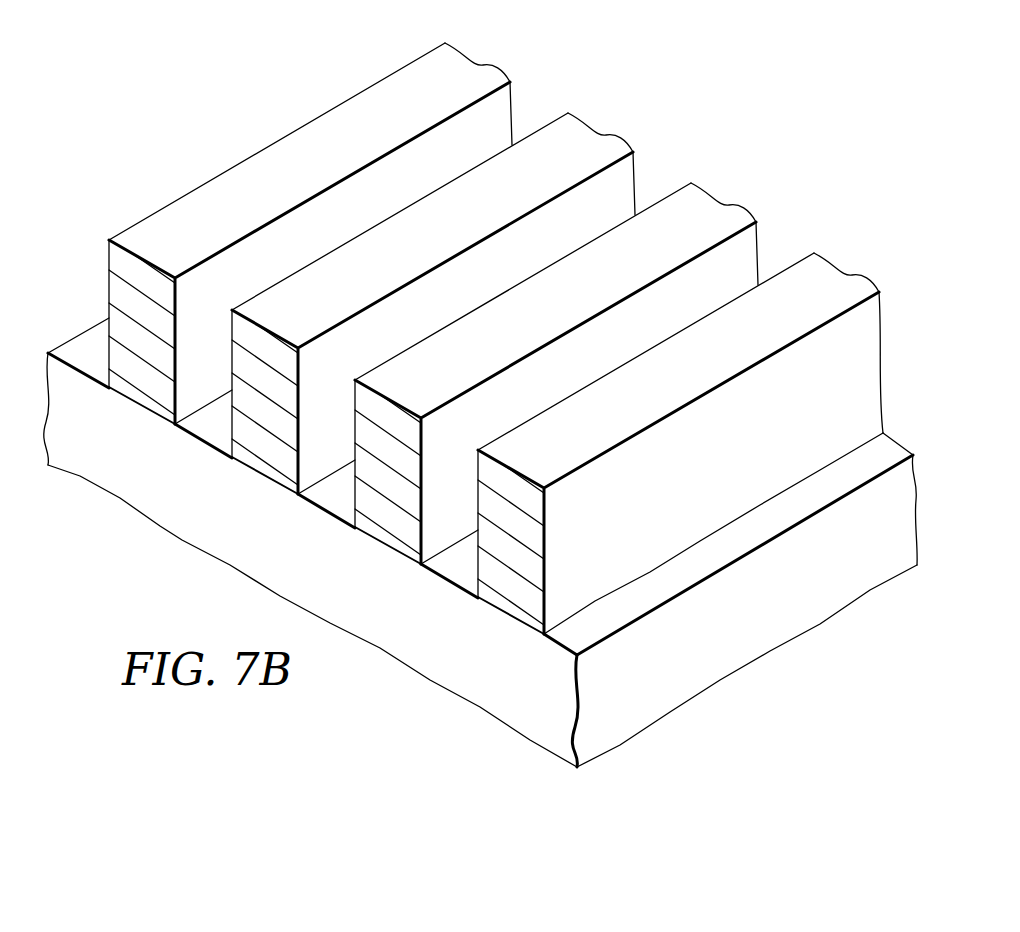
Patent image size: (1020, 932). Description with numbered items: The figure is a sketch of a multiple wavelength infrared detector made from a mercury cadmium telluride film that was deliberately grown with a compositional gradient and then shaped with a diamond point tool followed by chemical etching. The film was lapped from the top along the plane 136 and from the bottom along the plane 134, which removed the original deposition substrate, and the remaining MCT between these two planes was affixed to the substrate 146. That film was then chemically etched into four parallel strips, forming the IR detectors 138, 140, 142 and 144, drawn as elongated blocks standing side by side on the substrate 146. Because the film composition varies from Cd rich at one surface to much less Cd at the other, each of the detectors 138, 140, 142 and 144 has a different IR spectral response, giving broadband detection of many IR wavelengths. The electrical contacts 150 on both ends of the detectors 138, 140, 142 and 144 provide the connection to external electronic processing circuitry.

The bottom lapping plane 134 is at (157, 417).
The top lapping plane 136 is at (467, 68).
The IR detector 138 is at (308, 180).
The IR detector 140 is at (440, 253).
The IR detector 142 is at (563, 322).
The IR detector 144 is at (698, 378).
The substrate 146 is at (500, 712).
The electrical contacts 150 is at (129, 382).